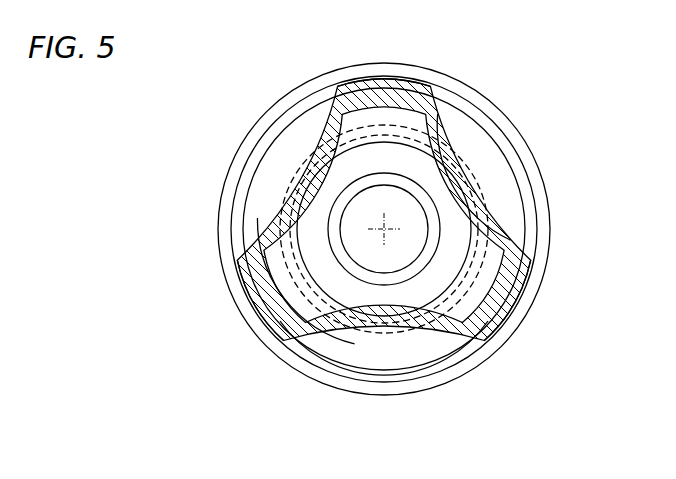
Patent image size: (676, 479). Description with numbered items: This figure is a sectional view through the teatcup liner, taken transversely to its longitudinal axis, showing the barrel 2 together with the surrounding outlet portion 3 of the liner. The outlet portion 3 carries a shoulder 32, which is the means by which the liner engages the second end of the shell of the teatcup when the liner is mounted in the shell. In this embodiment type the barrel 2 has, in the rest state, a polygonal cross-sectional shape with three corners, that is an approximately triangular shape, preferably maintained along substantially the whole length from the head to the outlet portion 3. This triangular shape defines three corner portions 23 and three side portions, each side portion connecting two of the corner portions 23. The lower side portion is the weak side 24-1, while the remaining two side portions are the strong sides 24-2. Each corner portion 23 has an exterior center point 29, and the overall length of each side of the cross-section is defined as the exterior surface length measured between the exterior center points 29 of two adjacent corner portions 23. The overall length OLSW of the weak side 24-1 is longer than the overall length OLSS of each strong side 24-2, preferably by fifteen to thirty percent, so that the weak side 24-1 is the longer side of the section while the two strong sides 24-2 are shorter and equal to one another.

The barrel 2 is at (262, 200).
The outlet portion 3 is at (220, 213).
The shoulder 32 is at (222, 233).
The corner portions 23 is at (376, 79).
The exterior center points 29 is at (396, 79).
The weak side 24-1 is at (385, 331).
The strong sides 24-2 is at (298, 165).
The overall length of strong side OLSS is at (335, 98).
The overall length of weak side OLSW is at (300, 334).